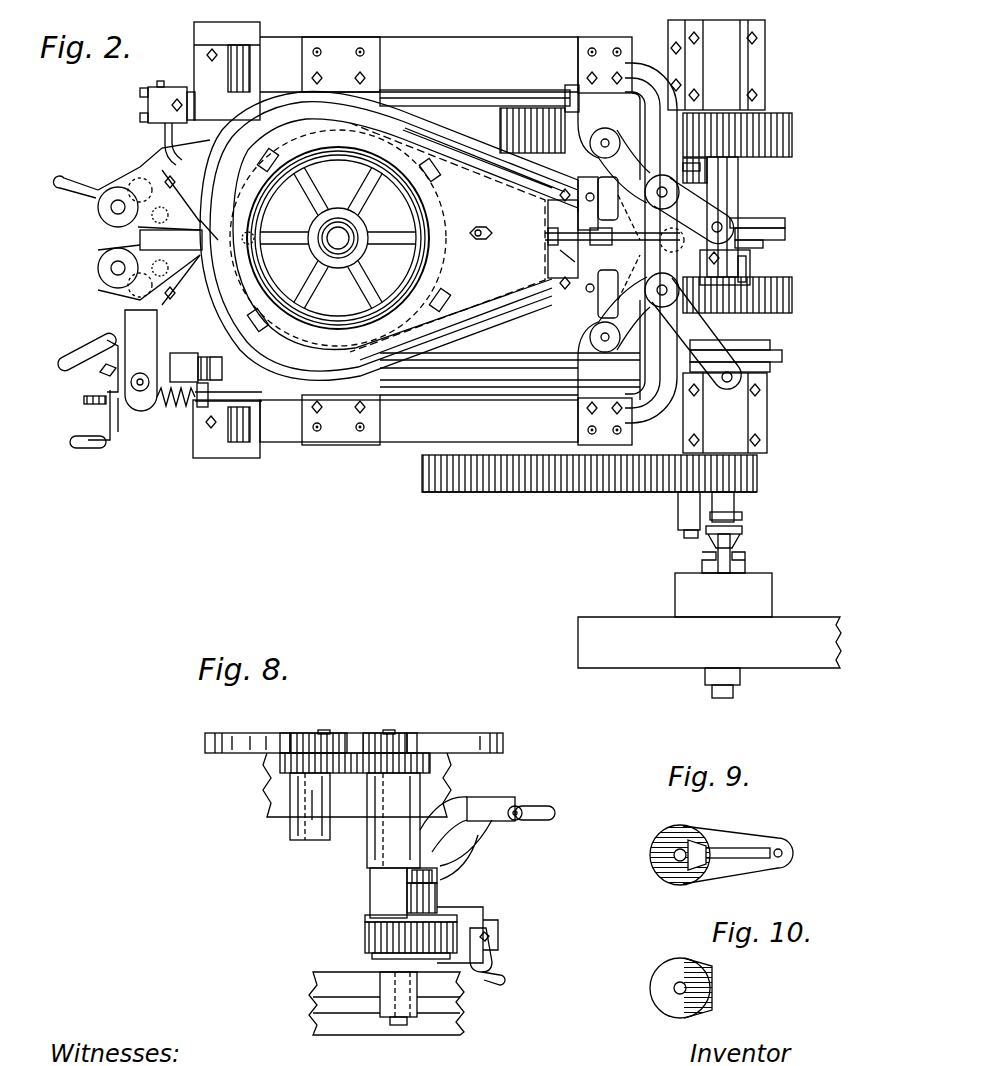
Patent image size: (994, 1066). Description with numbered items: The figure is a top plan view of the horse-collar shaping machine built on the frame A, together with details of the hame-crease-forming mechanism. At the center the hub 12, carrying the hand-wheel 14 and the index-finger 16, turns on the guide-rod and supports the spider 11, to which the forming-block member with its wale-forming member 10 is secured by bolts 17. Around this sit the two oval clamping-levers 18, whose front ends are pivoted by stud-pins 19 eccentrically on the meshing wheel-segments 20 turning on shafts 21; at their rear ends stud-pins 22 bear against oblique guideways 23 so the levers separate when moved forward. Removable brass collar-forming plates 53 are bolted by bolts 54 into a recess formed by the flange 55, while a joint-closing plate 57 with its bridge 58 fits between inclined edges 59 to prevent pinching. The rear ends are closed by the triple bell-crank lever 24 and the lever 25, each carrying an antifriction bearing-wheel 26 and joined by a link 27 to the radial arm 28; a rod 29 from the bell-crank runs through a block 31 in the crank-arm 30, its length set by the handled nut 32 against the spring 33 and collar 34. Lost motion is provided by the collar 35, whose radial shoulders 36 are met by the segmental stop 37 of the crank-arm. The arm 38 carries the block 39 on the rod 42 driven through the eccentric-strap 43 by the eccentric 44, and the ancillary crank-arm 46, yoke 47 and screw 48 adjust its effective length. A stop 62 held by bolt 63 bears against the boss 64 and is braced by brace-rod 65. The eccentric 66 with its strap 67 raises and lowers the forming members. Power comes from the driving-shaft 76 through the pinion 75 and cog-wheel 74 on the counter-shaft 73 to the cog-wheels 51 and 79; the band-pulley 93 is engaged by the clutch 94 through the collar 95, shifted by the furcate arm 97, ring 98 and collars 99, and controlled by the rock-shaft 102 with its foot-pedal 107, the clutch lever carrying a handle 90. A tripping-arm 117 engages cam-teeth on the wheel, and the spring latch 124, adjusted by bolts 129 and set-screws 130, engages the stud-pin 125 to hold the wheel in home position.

In FIG. 2, the frame A is at (462, 46).
In FIG. 2, the wale-forming member 10 is at (292, 345).
In FIG. 2, the spider 11 is at (244, 240).
In FIG. 2, the hub 12 is at (318, 256).
In FIG. 2, the hand-wheel 14 is at (258, 270).
In FIG. 2, the index-finger 16 is at (326, 232).
In FIG. 2, the bolts 17 is at (484, 238).
In FIG. 2, the clamping-levers 18 is at (420, 355).
In FIG. 8, the clamping-levers 18 is at (243, 740).
In FIG. 2, the stud-pins 19 is at (112, 208).
In FIG. 8, the stud-pins 19 is at (325, 732).
In FIG. 2, the wheel-segments 20 is at (130, 178).
In FIG. 8, the wheel-segments 20 is at (280, 762).
In FIG. 2, the shaft 21 is at (138, 178).
In FIG. 8, the shaft 21 is at (310, 840).
In FIG. 2, the stud-pins 22 is at (602, 247).
In FIG. 2, the guideways 23 is at (627, 247).
In FIG. 2, the triple bell-crank lever 24 is at (696, 333).
In FIG. 2, the lever 25 is at (694, 211).
In FIG. 2, the antifriction bearing-wheel 26 is at (592, 150).
In FIG. 2, the link 27 is at (675, 240).
In FIG. 2, the radial arm 28 is at (662, 241).
In FIG. 2, the rod 29 is at (456, 396).
In FIG. 2, the crank-arm 30 is at (141, 360).
In FIG. 8, the crank-arm 30 is at (470, 850).
In FIG. 9, the crank-arm 30 is at (740, 832).
In FIG. 2, the block 31 is at (138, 412).
In FIG. 8, the block 31 is at (510, 798).
In FIG. 2, the handled nut 32 is at (112, 417).
In FIG. 8, the handled nut 32 is at (538, 818).
In FIG. 2, the spring 33 is at (178, 408).
In FIG. 2, the collar 34 is at (202, 410).
In FIG. 8, the collar 35 is at (370, 890).
In FIG. 10, the collar 35 is at (651, 994).
In FIG. 8, the radial shoulders 36 is at (408, 874).
In FIG. 10, the radial shoulders 36 is at (688, 958).
In FIG. 8, the segmental stop 37 is at (438, 878).
In FIG. 9, the segmental stop 37 is at (694, 840).
In FIG. 2, the arm 38 is at (178, 340).
In FIG. 8, the arm 38 is at (365, 918).
In FIG. 2, the block 39 is at (182, 365).
In FIG. 2, the rod 42 is at (510, 372).
In FIG. 2, the eccentric-strap 43 is at (784, 356).
In FIG. 2, the eccentric 44 is at (772, 344).
In FIG. 8, the ancillary crank-arm 46 is at (365, 938).
In FIG. 2, the yoke 47 is at (110, 378).
In FIG. 8, the yoke 47 is at (478, 910).
In FIG. 2, the screw 48 is at (100, 376).
In FIG. 8, the screw 48 is at (496, 936).
In FIG. 2, the cog-wheel 51 is at (792, 300).
In FIG. 2, the collar-forming plates 53 is at (548, 222).
In FIG. 2, the bolts 54 is at (367, 239).
In FIG. 2, the flange 55 is at (240, 335).
In FIG. 8, the flange 55 is at (284, 745).
In FIG. 2, the plate 57 is at (204, 226).
In FIG. 2, the bridge 58 is at (200, 236).
In FIG. 2, the inclined edges 59 is at (185, 210).
In FIG. 2, the stop 62 is at (600, 245).
In FIG. 2, the bolt 63 is at (566, 256).
In FIG. 2, the boss 64 is at (548, 236).
In FIG. 2, the brace-rod 65 is at (578, 222).
In FIG. 2, the eccentric 66 is at (757, 214).
In FIG. 2, the strap 67 is at (784, 230).
In FIG. 2, the counter-shaft 73 is at (552, 340).
In FIG. 2, the cog-wheel 74 is at (500, 492).
In FIG. 2, the pinion 75 is at (758, 474).
In FIG. 2, the driving-shaft 76 is at (736, 502).
In FIG. 2, the cog-wheel 79 is at (792, 138).
In FIG. 2, the handle 90 is at (96, 180).
In FIG. 2, the band-pulley 93 is at (652, 668).
In FIG. 2, the clutch 94 is at (742, 566).
In FIG. 2, the collar 95 is at (742, 530).
In FIG. 2, the furcate arm 97 is at (678, 520).
In FIG. 2, the ring 98 is at (742, 516).
In FIG. 2, the collars 99 is at (684, 534).
In FIG. 2, the rock-shaft 102 is at (494, 92).
In FIG. 2, the foot-pedal 107 is at (108, 332).
In FIG. 2, the tripping-arm 117 is at (722, 172).
In FIG. 2, the spring latch 124 is at (750, 260).
In FIG. 2, the stud-pin 125 is at (566, 96).
In FIG. 2, the bolts 129 is at (764, 246).
In FIG. 2, the set-screws 130 is at (748, 270).